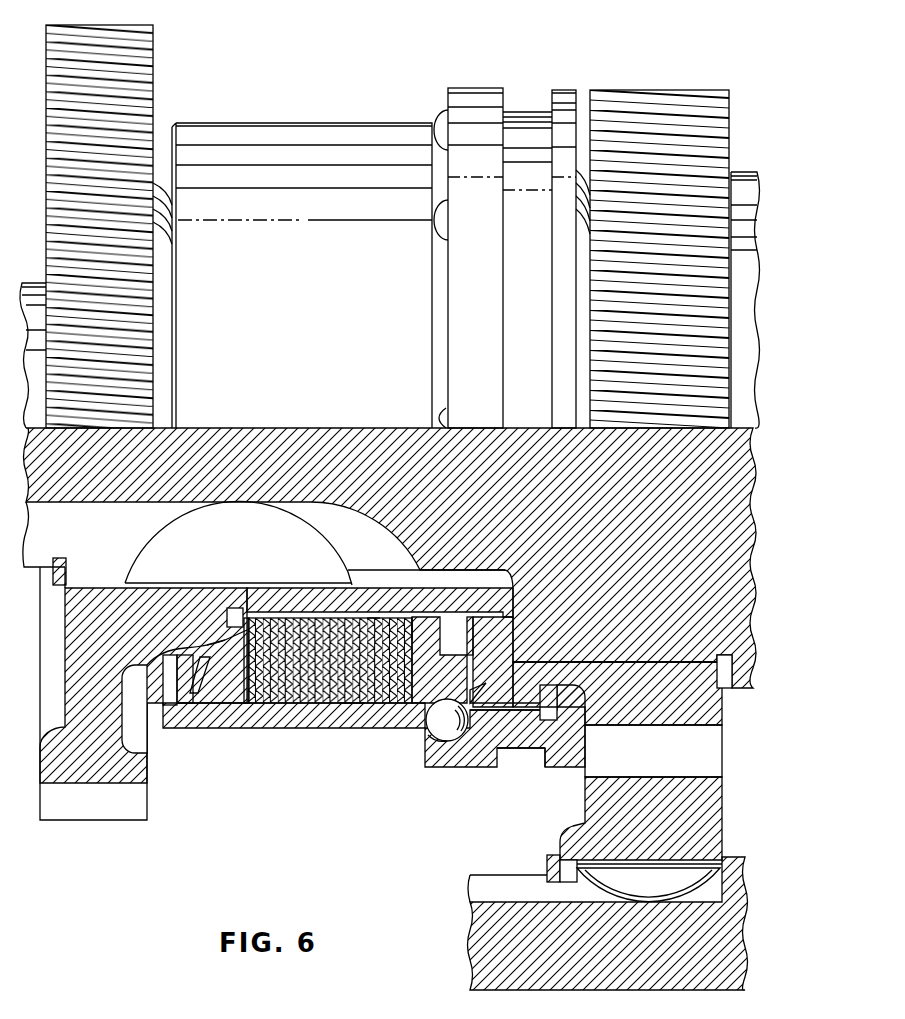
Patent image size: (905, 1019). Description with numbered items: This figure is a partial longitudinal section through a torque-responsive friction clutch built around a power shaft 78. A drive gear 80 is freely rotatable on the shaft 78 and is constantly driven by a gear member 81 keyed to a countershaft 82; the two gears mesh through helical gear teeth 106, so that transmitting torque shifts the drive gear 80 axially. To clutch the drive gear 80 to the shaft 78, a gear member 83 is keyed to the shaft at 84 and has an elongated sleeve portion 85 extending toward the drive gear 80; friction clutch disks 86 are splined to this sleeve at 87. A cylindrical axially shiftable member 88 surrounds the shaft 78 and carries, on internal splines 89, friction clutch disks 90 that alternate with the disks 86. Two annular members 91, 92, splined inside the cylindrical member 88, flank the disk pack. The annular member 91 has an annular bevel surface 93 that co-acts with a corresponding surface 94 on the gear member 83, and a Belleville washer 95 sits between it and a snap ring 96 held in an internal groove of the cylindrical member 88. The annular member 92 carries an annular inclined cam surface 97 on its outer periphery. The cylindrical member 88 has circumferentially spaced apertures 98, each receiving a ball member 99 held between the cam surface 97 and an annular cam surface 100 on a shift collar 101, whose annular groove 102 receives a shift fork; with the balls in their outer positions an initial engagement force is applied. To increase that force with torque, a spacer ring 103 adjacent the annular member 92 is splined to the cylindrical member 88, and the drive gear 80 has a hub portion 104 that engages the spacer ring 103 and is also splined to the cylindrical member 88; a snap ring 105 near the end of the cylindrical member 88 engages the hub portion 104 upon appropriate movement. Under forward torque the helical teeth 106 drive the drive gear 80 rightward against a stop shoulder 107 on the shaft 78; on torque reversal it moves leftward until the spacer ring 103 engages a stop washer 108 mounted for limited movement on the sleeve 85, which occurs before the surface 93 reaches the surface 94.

The power shaft 78 is at (390, 558).
The drive gear 80 is at (617, 693).
The gear member 81 is at (641, 818).
The countershaft 82 is at (608, 922).
The gear member 83 is at (143, 685).
The keyed connection 84 is at (315, 543).
The sleeve portion 85 is at (445, 612).
The friction clutch disks 86 is at (373, 622).
The splines 87 is at (424, 622).
The cylindrical axially shiftable member 88 is at (300, 703).
The internal splines 89 is at (250, 705).
The friction clutch disks 90 is at (352, 703).
The annular member 91 is at (236, 710).
The annular member 92 is at (439, 660).
The annular bevel surface 93 is at (222, 650).
The corresponding surface 94 is at (232, 650).
The Belleville washer 95 is at (205, 695).
The snap ring 96 is at (185, 703).
The annular inclined cam surface 97 is at (478, 691).
The apertures 98 is at (505, 726).
The ball member 99 is at (447, 720).
The annular cam surface 100 is at (436, 738).
The shift collar 101 is at (487, 765).
The annular groove 102 is at (532, 752).
The spacer ring 103 is at (493, 662).
The hub portion 104 is at (539, 672).
The snap ring 105 is at (557, 704).
The helical gear teeth 106 is at (712, 755).
The stop shoulder 107 is at (717, 680).
The stop washer 108 is at (468, 630).